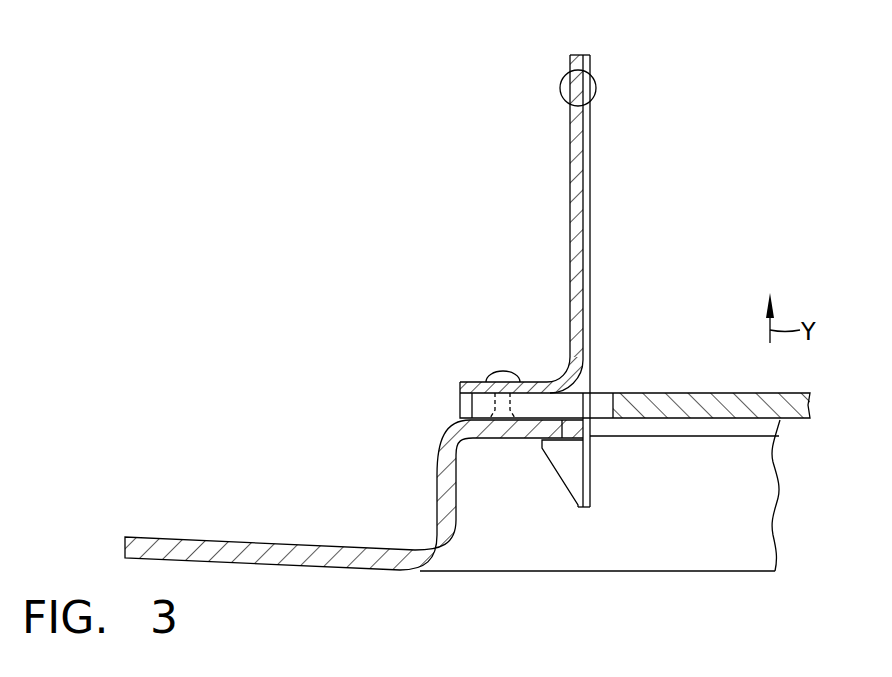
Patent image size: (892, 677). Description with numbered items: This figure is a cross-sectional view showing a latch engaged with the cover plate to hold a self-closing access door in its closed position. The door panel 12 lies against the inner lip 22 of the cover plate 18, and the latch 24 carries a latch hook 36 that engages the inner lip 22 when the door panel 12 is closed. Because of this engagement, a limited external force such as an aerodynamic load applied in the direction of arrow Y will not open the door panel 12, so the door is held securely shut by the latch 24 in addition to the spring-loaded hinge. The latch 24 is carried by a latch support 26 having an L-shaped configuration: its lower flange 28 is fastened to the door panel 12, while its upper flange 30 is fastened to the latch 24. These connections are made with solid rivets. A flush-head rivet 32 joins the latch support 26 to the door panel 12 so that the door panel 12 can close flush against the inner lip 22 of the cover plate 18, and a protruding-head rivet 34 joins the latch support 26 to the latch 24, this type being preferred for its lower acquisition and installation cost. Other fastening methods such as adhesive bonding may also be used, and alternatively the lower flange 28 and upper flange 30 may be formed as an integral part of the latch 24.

The door panel 12 is at (485, 410).
The cover plate 18 is at (354, 490).
The inner lip 22 is at (455, 440).
The latch 24 is at (602, 254).
The latch support 26 is at (550, 254).
The lower flange 28 is at (471, 382).
The upper flange 30 is at (577, 55).
The flush-head rivet 32 is at (503, 371).
The protruding-head rivet 34 is at (595, 78).
The latch hook 36 is at (568, 467).